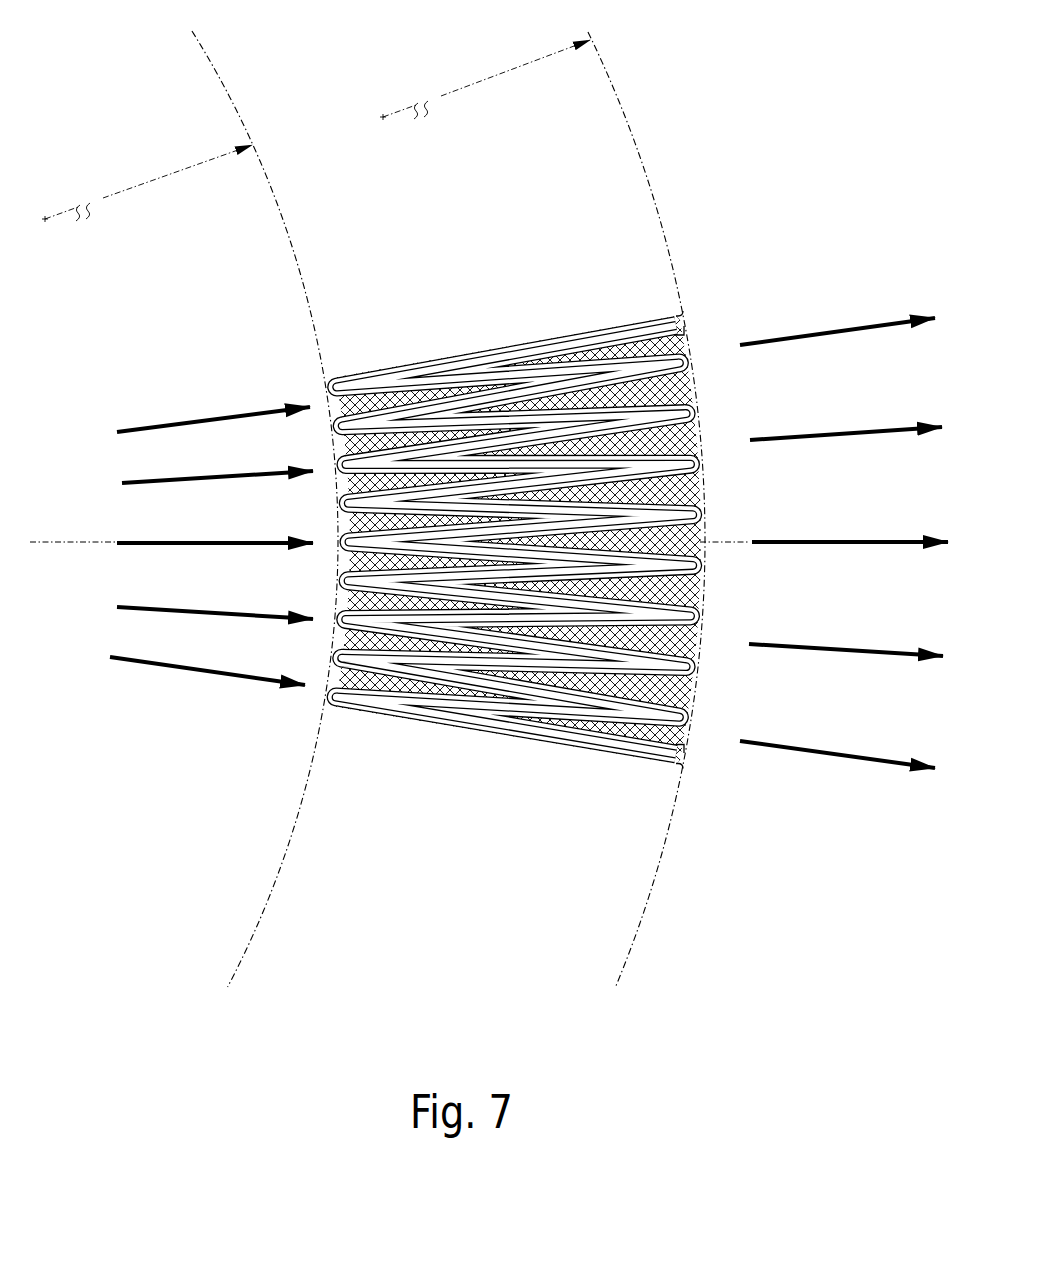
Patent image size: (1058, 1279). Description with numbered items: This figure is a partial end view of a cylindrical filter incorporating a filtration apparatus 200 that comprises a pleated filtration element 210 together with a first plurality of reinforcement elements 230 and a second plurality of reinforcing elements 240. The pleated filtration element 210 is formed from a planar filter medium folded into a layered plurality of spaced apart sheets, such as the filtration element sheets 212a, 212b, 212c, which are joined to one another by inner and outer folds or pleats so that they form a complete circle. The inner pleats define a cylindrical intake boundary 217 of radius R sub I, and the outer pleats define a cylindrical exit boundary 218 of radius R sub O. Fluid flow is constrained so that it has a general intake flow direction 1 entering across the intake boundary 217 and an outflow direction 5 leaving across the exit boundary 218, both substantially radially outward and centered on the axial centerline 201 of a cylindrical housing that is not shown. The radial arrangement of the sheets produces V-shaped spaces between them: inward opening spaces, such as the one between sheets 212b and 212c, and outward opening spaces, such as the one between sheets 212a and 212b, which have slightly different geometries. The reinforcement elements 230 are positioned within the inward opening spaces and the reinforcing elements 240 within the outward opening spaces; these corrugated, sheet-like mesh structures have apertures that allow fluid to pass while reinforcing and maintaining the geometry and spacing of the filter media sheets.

The filtration apparatus 200 is at (468, 499).
The pleated filtration element 210 is at (690, 347).
The filtration element sheet 212a is at (433, 362).
The filtration element sheet 212b is at (502, 363).
The filtration element sheet 212c is at (573, 372).
The cylindrical intake boundary 217 is at (292, 247).
The outer radius boundary 218 is at (635, 140).
The first plurality of reinforcement elements 230 is at (330, 408).
The second plurality of reinforcing elements 240 is at (690, 380).
The centerline axis 201 is at (60, 542).
The intake flow direction 1 is at (187, 670).
The outflow direction 5 is at (825, 755).